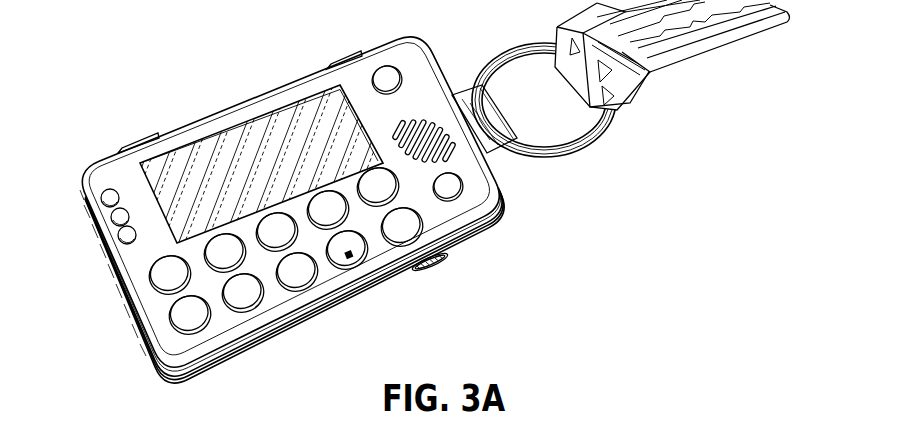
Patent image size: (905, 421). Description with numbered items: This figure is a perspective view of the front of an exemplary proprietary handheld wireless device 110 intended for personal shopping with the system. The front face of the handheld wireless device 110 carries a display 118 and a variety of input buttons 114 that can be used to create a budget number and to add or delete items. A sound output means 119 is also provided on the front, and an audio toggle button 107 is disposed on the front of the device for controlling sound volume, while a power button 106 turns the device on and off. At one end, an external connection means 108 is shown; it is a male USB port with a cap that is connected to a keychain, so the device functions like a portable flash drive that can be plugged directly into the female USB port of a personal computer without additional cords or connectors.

The handheld wireless device 110 is at (203, 83).
The display 118 is at (280, 120).
The sound output means 119 is at (420, 124).
The audio toggle button 107 is at (385, 66).
The power button 106 is at (455, 201).
The input buttons 114 is at (110, 189).
The external connection means 108 is at (497, 96).